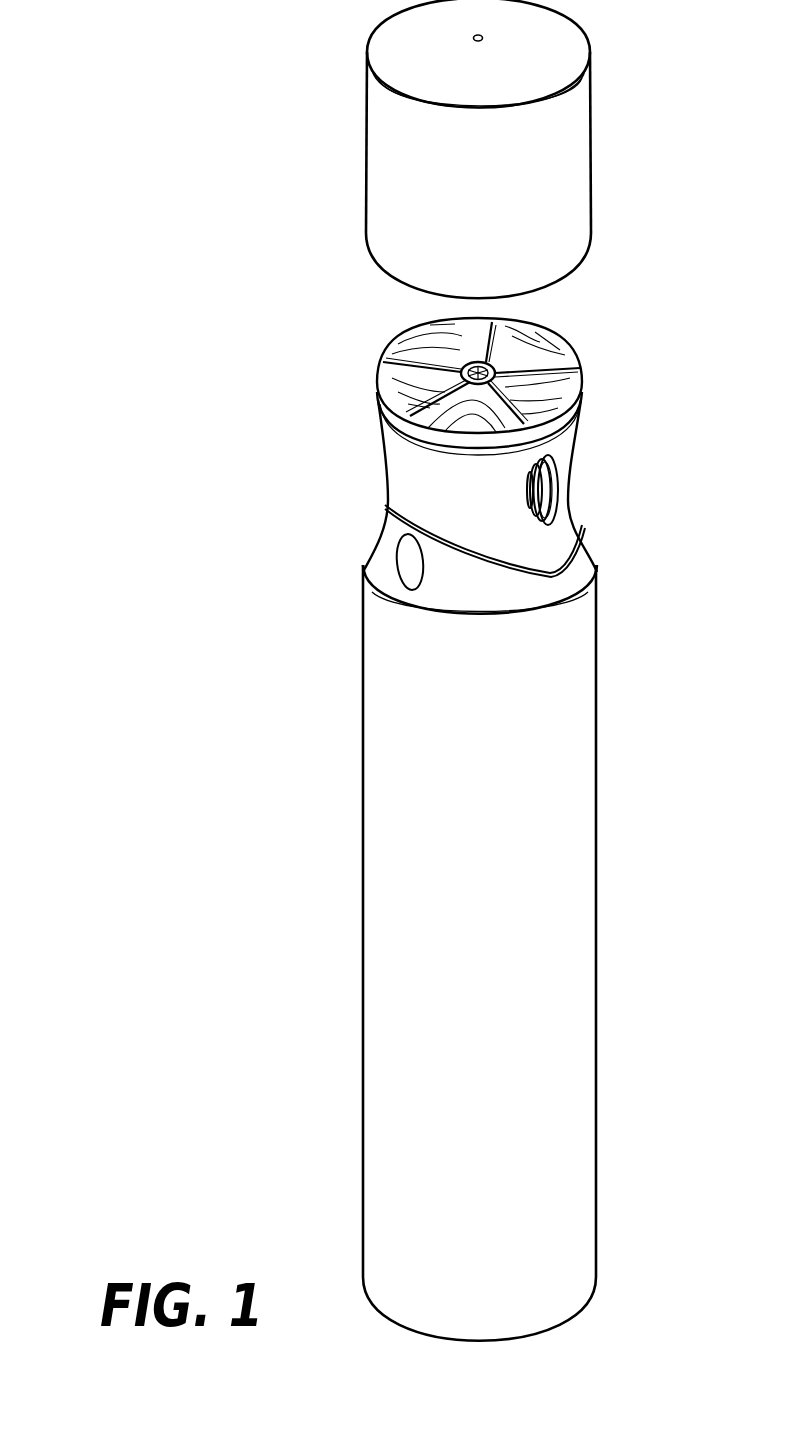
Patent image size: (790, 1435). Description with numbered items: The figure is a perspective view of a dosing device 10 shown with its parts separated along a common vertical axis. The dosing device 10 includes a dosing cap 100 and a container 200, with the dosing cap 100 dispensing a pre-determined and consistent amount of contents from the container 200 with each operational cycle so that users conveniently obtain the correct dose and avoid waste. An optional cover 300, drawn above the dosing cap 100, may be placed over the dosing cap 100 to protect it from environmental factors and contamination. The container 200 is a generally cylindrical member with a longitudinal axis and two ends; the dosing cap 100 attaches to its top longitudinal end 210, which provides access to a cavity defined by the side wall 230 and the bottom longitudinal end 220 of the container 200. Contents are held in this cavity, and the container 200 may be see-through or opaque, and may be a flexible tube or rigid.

The dosing device 10 is at (96, 94).
The cover 300 is at (367, 155).
The dosing cap 100 is at (387, 475).
The top longitudinal end 210 is at (362, 577).
The container 200 is at (596, 880).
The side wall 230 is at (363, 857).
The bottom longitudinal end 220 is at (587, 1298).